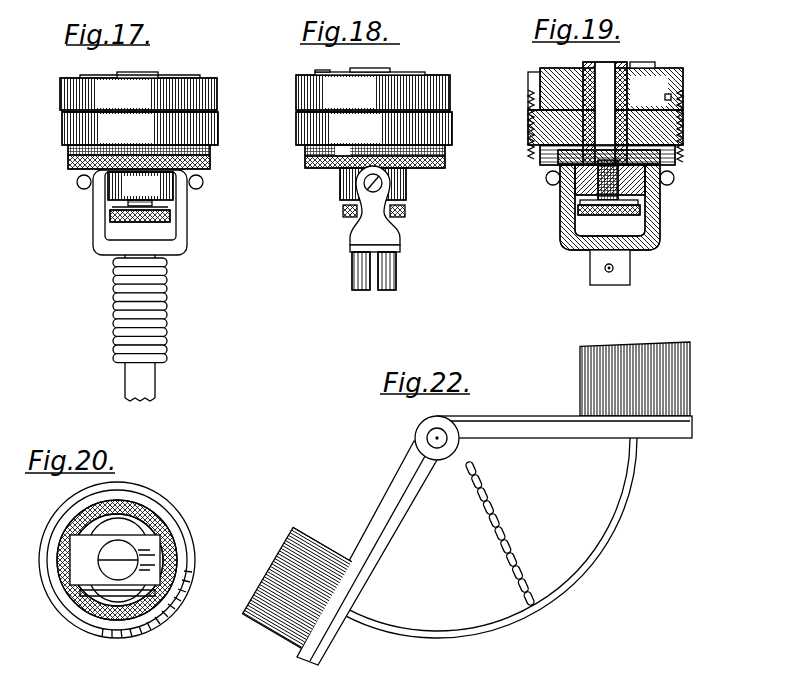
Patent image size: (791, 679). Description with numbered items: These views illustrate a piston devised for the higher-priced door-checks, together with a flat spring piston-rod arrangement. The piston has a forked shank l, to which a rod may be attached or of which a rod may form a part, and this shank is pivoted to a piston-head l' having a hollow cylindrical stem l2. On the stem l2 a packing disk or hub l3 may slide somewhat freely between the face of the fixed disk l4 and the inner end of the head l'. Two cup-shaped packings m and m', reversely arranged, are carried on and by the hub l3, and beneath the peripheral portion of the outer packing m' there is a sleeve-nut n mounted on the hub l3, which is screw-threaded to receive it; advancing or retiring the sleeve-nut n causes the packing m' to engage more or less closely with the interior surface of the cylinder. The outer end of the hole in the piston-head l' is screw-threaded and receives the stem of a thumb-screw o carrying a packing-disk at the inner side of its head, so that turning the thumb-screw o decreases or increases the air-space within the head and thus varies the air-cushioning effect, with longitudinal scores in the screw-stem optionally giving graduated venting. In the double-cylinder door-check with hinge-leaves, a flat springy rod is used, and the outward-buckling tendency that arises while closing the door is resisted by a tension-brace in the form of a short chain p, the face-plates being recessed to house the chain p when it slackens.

In FIG. 17, the forked shank l is at (141, 285).
In FIG. 18, the forked shank l is at (375, 228).
In FIG. 19, the forked shank l is at (609, 225).
In FIG. 20, the forked shank l is at (115, 560).
In FIG. 17, the piston-head l' is at (140, 189).
In FIG. 18, the piston-head l' is at (361, 187).
In FIG. 19, the piston-head l' is at (610, 180).
In FIG. 20, the piston-head l' is at (118, 560).
In FIG. 17, the hollow cylindrical stem l2 is at (151, 72).
In FIG. 18, the hollow cylindrical stem l2 is at (378, 68).
In FIG. 19, the hollow cylindrical stem l2 is at (613, 70).
In FIG. 19, the packing disk or hub l3 is at (665, 97).
In FIG. 17, the fixed disk l4 is at (183, 76).
In FIG. 18, the fixed disk l4 is at (330, 71).
In FIG. 19, the fixed disk l4 is at (657, 68).
In FIG. 17, the cup-shaped packing m is at (138, 95).
In FIG. 18, the cup-shaped packing m is at (373, 93).
In FIG. 19, the cup-shaped packing m is at (618, 89).
In FIG. 17, the outer cup-shaped packing m' is at (140, 128).
In FIG. 18, the outer cup-shaped packing m' is at (374, 128).
In FIG. 19, the outer cup-shaped packing m' is at (620, 126).
In FIG. 20, the outer cup-shaped packing m' is at (124, 553).
In FIG. 17, the sleeve-nut n is at (72, 155).
In FIG. 18, the sleeve-nut n is at (307, 158).
In FIG. 19, the sleeve-nut n is at (682, 150).
In FIG. 20, the sleeve-nut n is at (58, 528).
In FIG. 17, the thumb-screw o is at (140, 223).
In FIG. 18, the thumb-screw o is at (369, 217).
In FIG. 19, the thumb-screw o is at (609, 216).
In FIG. 20, the thumb-screw o is at (121, 543).
In FIG. 22, the short chain p is at (494, 531).